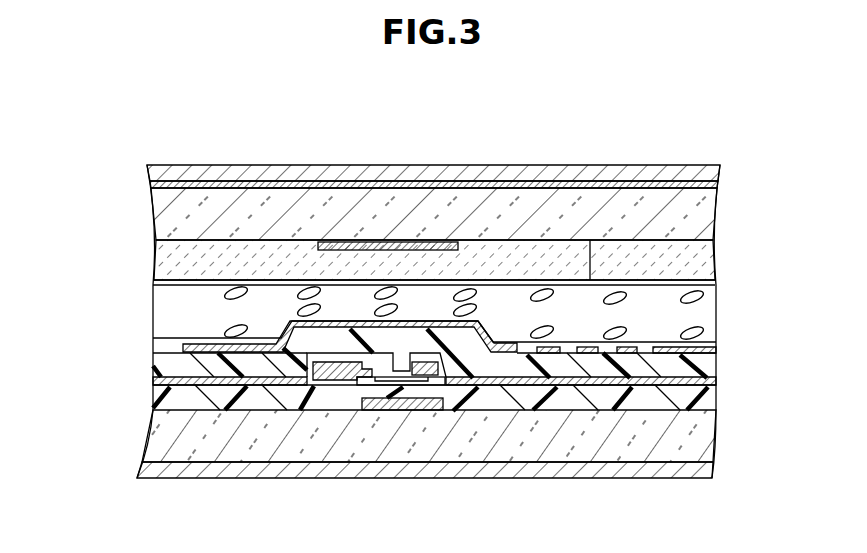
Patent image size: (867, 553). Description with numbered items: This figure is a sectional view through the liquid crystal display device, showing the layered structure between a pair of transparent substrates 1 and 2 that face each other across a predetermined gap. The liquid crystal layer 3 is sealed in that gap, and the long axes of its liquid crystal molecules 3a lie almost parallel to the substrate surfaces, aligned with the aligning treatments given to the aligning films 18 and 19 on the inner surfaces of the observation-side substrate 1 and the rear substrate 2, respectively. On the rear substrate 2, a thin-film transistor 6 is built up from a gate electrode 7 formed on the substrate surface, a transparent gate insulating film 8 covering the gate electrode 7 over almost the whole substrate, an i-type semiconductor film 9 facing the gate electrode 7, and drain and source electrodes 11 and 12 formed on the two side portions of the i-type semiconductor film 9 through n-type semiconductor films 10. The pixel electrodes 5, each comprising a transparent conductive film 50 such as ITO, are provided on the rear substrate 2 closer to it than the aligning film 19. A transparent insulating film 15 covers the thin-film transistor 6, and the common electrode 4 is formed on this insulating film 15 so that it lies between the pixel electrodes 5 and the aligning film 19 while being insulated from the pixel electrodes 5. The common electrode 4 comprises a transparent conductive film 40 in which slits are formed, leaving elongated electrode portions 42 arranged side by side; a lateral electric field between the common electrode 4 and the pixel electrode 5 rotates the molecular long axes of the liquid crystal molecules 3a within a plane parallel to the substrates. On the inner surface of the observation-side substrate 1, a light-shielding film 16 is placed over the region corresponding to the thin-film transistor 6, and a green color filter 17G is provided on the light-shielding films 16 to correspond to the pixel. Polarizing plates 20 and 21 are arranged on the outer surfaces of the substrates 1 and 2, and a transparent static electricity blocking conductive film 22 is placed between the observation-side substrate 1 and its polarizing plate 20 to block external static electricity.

The transparent substrate 1 is at (703, 218).
The rear substrate 2 is at (700, 442).
The liquid crystal layer 3 is at (703, 323).
The liquid crystal molecules 3a is at (262, 333).
The common electrode 4 is at (678, 378).
The pixel electrode 5 is at (257, 400).
The thin-film transistor 6 is at (366, 428).
The gate electrode 7 is at (426, 404).
The gate insulating film 8 is at (522, 388).
The i-type semiconductor film 9 is at (399, 393).
The n-type semiconductor film 10 is at (340, 387).
The drain electrode 11 is at (448, 373).
The source electrode 12 is at (315, 381).
The transparent insulating film 15 is at (559, 368).
The light-shielding film 16 is at (410, 246).
The green color filter 17G is at (514, 266).
The aligning film 18 is at (704, 296).
The aligning film 19 is at (213, 340).
The polarizing plate 20 is at (683, 180).
The polarizing plate 21 is at (707, 479).
The static electricity blocking conductive film 22 is at (222, 187).
The transparent conductive film 40 is at (490, 328).
The elongated electrode portion 42 is at (598, 357).
The transparent conductive film 50 is at (195, 384).